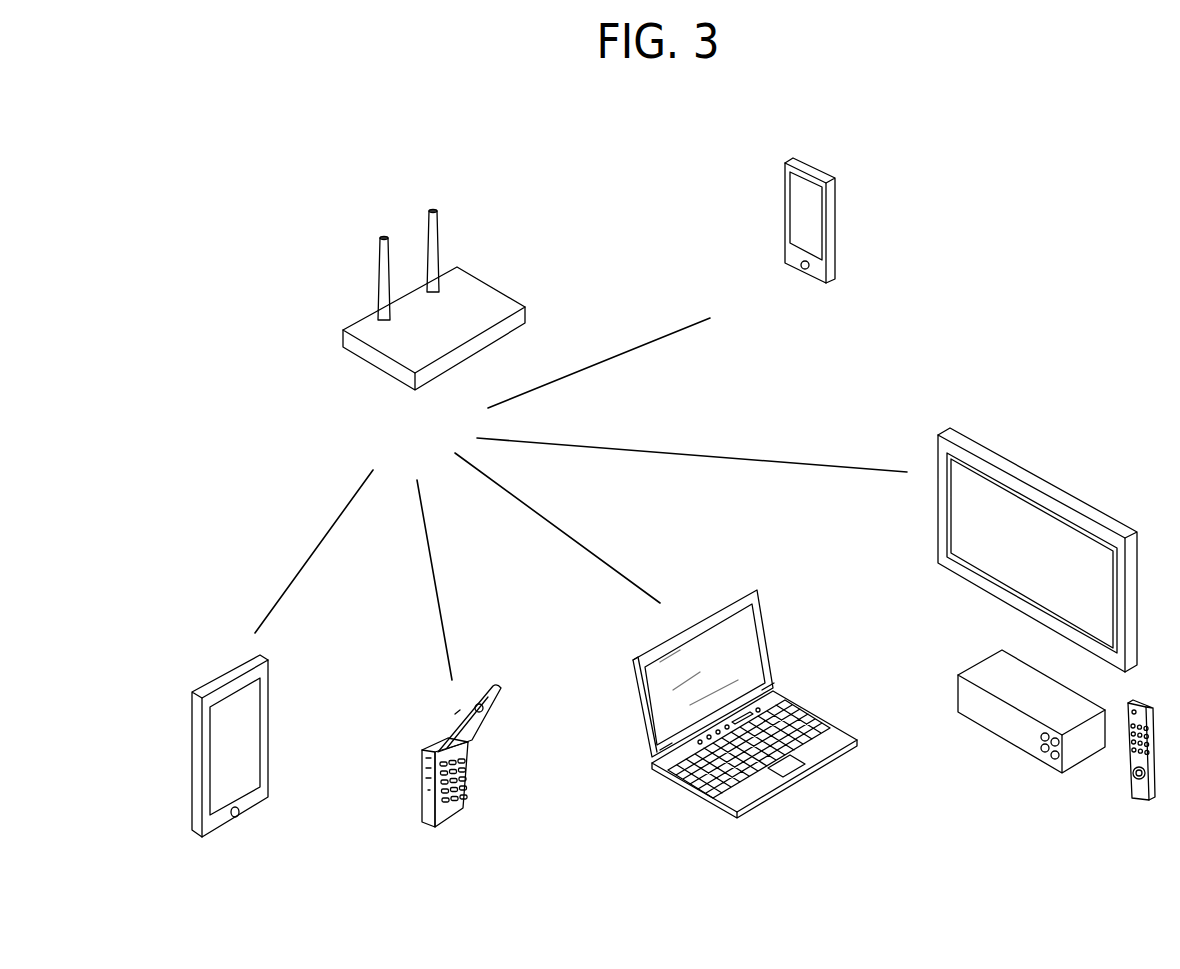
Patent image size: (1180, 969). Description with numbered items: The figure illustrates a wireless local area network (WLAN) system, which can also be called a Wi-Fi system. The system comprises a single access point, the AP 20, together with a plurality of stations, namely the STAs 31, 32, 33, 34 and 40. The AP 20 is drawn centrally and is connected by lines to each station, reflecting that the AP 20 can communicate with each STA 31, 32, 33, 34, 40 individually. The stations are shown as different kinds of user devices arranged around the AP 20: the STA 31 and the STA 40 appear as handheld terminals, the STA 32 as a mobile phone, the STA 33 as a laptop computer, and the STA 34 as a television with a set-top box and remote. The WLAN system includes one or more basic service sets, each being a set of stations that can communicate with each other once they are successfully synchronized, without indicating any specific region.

The AP 20 is at (434, 341).
The station (STA) 40 is at (803, 259).
The station (STA) 31 is at (226, 784).
The station (STA) 32 is at (456, 799).
The station (STA) 33 is at (745, 739).
The station (STA) 34 is at (1046, 639).